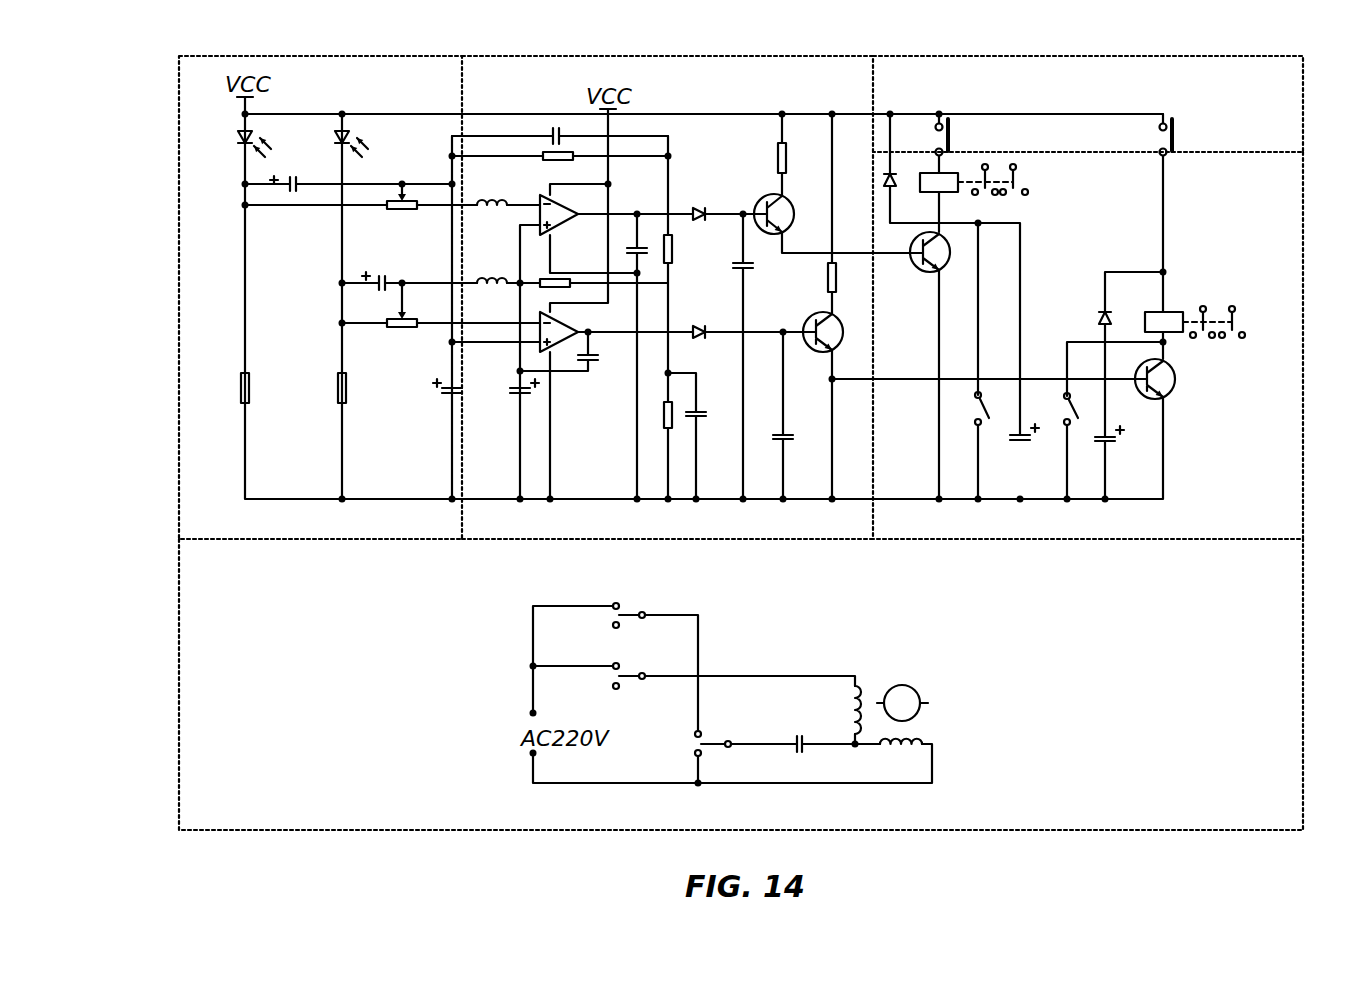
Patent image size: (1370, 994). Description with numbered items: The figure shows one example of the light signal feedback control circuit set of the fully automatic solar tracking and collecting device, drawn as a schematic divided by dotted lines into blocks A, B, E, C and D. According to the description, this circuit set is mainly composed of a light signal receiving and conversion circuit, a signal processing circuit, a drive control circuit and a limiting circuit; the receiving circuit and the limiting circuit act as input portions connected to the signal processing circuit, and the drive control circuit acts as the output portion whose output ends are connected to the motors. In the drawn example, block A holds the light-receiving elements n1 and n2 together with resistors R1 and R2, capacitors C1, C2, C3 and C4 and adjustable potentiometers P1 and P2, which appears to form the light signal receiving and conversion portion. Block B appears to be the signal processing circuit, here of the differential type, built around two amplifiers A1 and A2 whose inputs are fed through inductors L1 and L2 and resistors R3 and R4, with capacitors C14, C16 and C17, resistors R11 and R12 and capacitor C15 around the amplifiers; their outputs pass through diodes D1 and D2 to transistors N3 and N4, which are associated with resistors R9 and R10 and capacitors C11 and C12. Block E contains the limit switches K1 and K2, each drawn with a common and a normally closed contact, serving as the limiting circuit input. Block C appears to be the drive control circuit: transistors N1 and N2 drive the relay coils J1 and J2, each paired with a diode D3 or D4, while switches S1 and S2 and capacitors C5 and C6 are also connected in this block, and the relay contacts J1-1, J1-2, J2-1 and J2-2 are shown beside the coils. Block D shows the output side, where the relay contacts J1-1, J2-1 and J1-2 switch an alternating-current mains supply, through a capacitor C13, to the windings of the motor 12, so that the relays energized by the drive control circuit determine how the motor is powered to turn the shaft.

The photodiode n1 is at (273, 141).
The photodiode n2 is at (370, 141).
The capacitor C1 is at (348, 171).
The capacitor C2 is at (380, 269).
The capacitor C3 is at (461, 376).
The capacitor C4 is at (512, 402).
The capacitor C5 is at (1034, 445).
The capacitor C6 is at (1119, 446).
The capacitor C11 is at (766, 356).
The capacitor C12 is at (803, 415).
The motor capacitor C13 is at (800, 728).
The capacitor C14 is at (618, 233).
The capacitor C15 is at (706, 408).
The capacitor C16 is at (560, 116).
The capacitor C17 is at (598, 371).
The potentiometer P1 is at (416, 180).
The potentiometer P2 is at (416, 305).
The resistor R1 is at (266, 383).
The resistor R2 is at (362, 383).
The resistor R3 is at (560, 169).
The resistor R4 is at (594, 270).
The resistor R9 is at (801, 155).
The resistor R10 is at (855, 214).
The resistor R11 is at (692, 269).
The resistor R12 is at (689, 438).
The inductor L1 is at (492, 189).
The inductor L2 is at (492, 267).
The operational amplifier A1 is at (616, 210).
The operational amplifier A2 is at (616, 327).
The diode D1 is at (730, 196).
The diode D2 is at (753, 318).
The diode D3 is at (871, 154).
The diode D4 is at (1121, 302).
The transistor N1 is at (946, 250).
The transistor N2 is at (1173, 387).
The transistor N3 is at (790, 214).
The transistor N4 is at (839, 327).
The limit switch K1 is at (941, 140).
The limit switch K2 is at (1163, 140).
The relay J1 is at (986, 175).
The relay J2 is at (1209, 316).
The relay contact J1-1 is at (805, 396).
The relay contact J1-2 is at (880, 460).
The relay contact J2-1 is at (917, 497).
The relay contact J2-2 is at (1248, 341).
The switch S1 is at (996, 408).
The switch S2 is at (1083, 407).
The motor 12 is at (924, 696).
The sensor circuit block A is at (397, 63).
The amplifier circuit block B is at (718, 63).
The relay drive circuit block C is at (1280, 244).
The motor power circuit block D is at (1282, 642).
The limit switch block E is at (1022, 63).